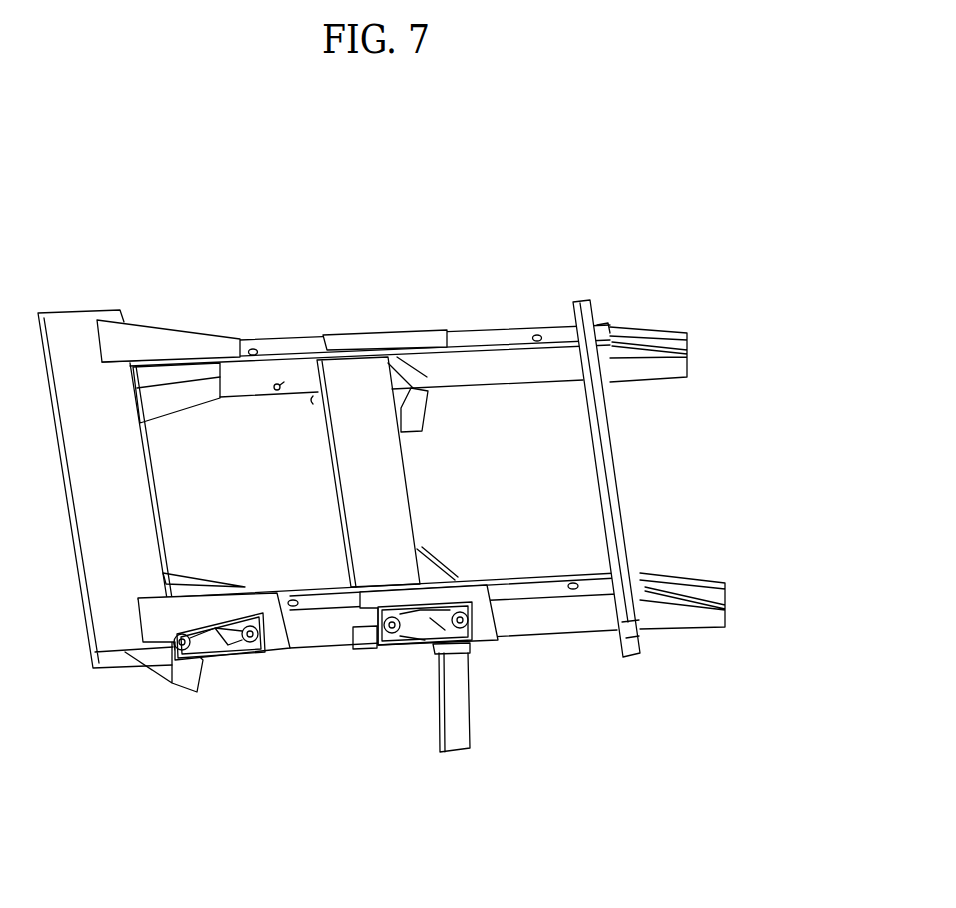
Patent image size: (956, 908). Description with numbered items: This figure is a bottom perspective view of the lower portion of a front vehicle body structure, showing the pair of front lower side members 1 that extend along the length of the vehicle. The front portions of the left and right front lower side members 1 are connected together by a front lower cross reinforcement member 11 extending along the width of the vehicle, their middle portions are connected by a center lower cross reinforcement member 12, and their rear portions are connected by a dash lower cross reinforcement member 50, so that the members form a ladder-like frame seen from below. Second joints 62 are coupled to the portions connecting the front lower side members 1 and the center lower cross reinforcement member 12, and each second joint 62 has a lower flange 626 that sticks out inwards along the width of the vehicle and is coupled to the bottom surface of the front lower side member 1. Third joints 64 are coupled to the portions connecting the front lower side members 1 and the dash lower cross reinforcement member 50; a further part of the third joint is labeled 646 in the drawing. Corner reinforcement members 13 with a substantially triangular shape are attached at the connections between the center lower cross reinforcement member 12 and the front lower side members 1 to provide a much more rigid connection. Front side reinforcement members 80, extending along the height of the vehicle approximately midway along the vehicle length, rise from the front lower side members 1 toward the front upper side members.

The front lower side member 1 is at (500, 340).
The front lower cross reinforcement member 11 is at (586, 316).
The center lower cross reinforcement member 12 is at (352, 397).
The corner reinforcement member 13 is at (422, 557).
The dash lower cross reinforcement member 50 is at (73, 340).
The second joint 62 is at (377, 316).
The lower flange 626 is at (422, 342).
The third joint 64 is at (160, 314).
The bracket gusset 646 is at (197, 343).
The front side reinforcement member 80 is at (412, 412).